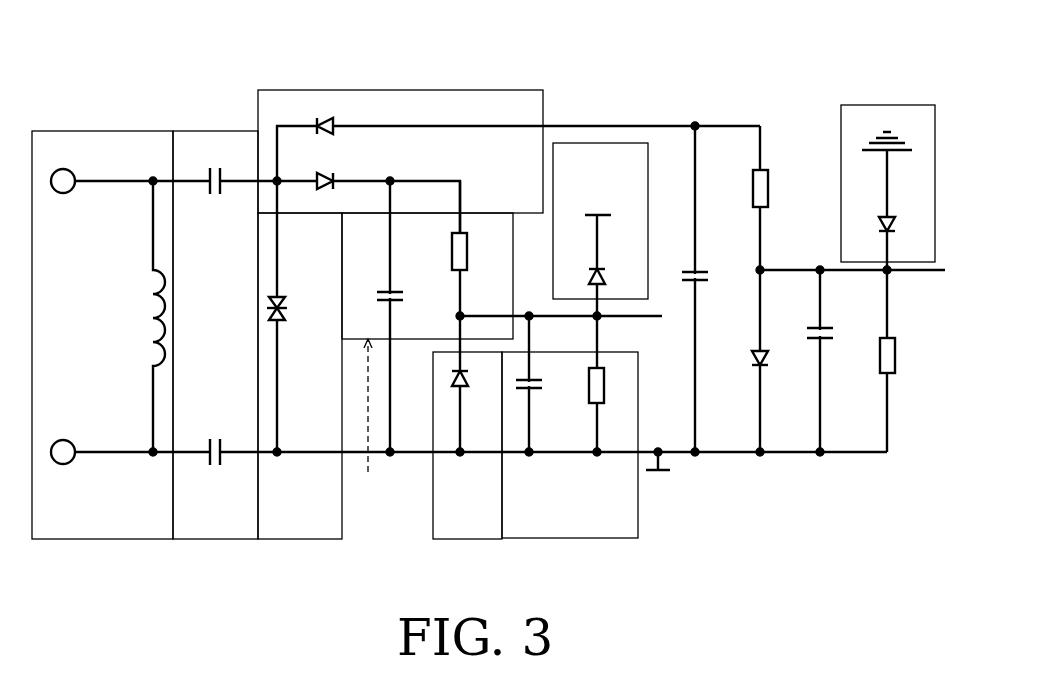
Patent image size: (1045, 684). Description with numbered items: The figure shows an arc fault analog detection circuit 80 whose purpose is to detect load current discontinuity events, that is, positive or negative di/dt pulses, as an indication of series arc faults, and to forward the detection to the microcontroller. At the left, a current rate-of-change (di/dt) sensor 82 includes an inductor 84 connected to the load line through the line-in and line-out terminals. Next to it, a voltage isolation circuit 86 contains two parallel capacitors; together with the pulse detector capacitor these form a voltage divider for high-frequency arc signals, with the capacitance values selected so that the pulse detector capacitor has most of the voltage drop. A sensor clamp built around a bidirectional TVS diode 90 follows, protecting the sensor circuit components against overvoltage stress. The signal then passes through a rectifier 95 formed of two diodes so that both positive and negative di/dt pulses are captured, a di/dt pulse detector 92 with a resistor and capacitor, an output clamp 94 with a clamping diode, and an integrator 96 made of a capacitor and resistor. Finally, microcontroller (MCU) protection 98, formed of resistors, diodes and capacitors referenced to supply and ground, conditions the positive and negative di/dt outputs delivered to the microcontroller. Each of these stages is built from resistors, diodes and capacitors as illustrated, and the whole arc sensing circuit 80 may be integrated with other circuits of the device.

The arc fault analog detection circuit 80 is at (707, 578).
The current rate-of-change (di/dt) sensor 82 is at (128, 553).
The inductor 84 is at (302, 558).
The voltage isolation circuit 86 is at (222, 551).
The bidirectional diode 90 is at (283, 300).
The di/dt pulse detector 92 is at (398, 540).
The output clamp 94 is at (473, 550).
The rectifier 95 is at (464, 80).
The integrator 96 is at (605, 553).
The microcontroller (MCU) protection 98 is at (858, 273).